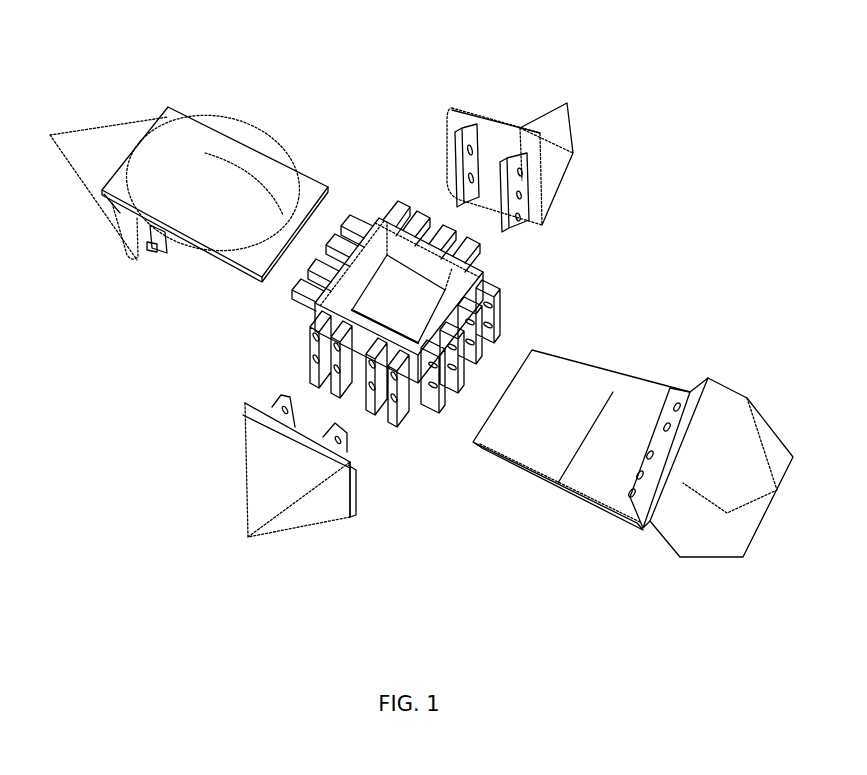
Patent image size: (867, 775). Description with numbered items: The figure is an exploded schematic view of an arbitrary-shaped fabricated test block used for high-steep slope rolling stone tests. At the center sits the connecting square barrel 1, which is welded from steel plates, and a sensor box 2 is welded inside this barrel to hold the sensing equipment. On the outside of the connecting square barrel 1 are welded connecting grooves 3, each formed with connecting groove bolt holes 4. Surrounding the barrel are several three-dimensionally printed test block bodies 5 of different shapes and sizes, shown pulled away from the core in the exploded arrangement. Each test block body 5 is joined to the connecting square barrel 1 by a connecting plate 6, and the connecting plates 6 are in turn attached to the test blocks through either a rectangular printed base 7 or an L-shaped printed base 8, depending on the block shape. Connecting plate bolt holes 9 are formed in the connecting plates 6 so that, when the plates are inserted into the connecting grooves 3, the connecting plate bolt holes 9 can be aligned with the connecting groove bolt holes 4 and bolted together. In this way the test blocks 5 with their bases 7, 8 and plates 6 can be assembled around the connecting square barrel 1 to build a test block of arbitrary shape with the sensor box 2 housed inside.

The connecting square barrel 1 is at (379, 218).
The sensor box 2 is at (437, 291).
The connecting groove 3 is at (393, 400).
The connecting groove bolt hole 4 is at (437, 378).
The test block body 5 is at (157, 132).
The connecting plate 6 is at (167, 247).
The rectangular 3D printing base 7 is at (543, 160).
The L-shaped 3D printing base 8 is at (112, 222).
The connecting plate bolt hole 9 is at (153, 240).